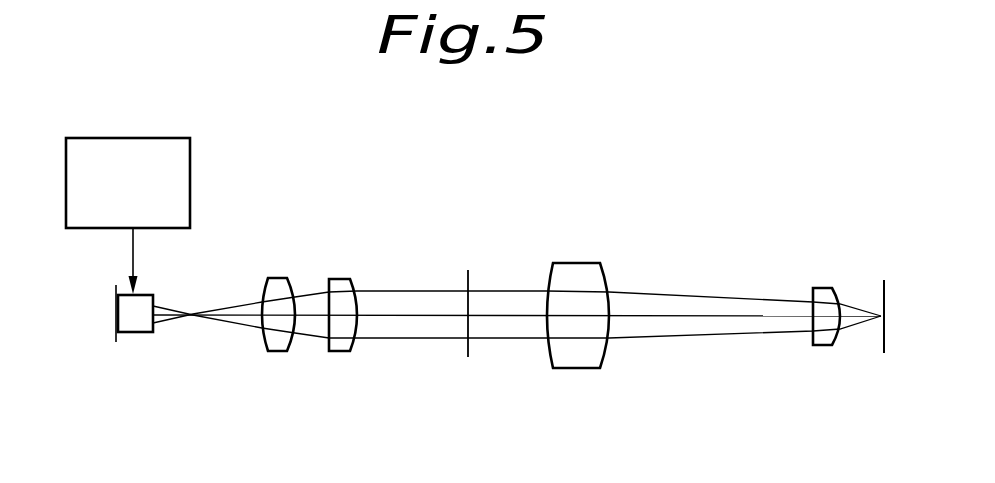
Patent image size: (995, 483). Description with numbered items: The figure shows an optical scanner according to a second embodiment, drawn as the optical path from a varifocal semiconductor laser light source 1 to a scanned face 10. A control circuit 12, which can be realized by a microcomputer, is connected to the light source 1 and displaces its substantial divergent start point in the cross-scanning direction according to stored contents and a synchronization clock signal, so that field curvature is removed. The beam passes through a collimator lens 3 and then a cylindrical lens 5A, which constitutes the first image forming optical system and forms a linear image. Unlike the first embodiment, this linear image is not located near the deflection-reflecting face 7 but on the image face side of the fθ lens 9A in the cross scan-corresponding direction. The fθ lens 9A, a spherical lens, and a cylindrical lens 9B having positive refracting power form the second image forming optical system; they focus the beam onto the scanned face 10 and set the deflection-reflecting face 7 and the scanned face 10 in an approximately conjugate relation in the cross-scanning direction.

The varifocal semiconductor laser light source 1 is at (143, 333).
The collimator lens 3 is at (284, 277).
The cylindrical lens 5A is at (346, 278).
The deflection-reflecting face 7 is at (469, 269).
The fθ lens 9A is at (580, 262).
The cylindrical lens 9B is at (824, 287).
The scanned face 10 is at (884, 279).
The control circuit 12 is at (190, 187).